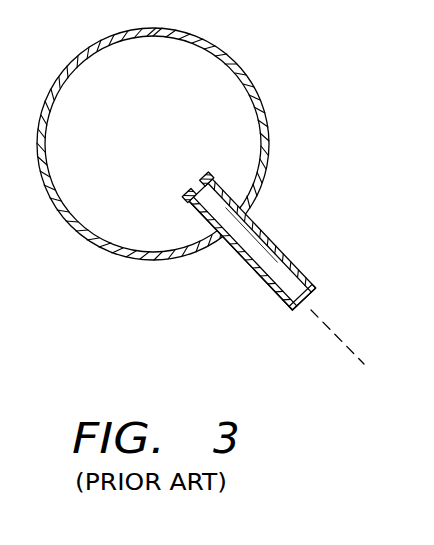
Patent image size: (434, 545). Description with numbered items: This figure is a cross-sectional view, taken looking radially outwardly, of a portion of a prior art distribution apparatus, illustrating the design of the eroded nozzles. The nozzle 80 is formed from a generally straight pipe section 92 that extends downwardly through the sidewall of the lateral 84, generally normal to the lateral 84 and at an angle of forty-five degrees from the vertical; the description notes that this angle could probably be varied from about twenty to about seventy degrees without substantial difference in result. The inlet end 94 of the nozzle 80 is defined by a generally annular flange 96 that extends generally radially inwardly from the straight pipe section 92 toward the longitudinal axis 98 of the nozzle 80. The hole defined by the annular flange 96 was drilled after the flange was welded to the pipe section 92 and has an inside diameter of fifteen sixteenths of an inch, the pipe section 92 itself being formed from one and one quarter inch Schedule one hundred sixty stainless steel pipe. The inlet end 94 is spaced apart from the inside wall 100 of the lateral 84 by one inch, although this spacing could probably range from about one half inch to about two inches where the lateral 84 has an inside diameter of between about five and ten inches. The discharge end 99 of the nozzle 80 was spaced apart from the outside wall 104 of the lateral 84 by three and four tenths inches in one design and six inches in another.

The nozzle 80 is at (286, 256).
The lateral 84 is at (250, 83).
The straight pipe section 92 is at (260, 281).
The inlet end 94 is at (201, 174).
The generally annular flange 96 is at (184, 192).
The longitudinal axis 98 is at (346, 341).
The discharge end 99 is at (301, 308).
The inside wall 100 is at (69, 80).
The outside wall 104 is at (267, 110).